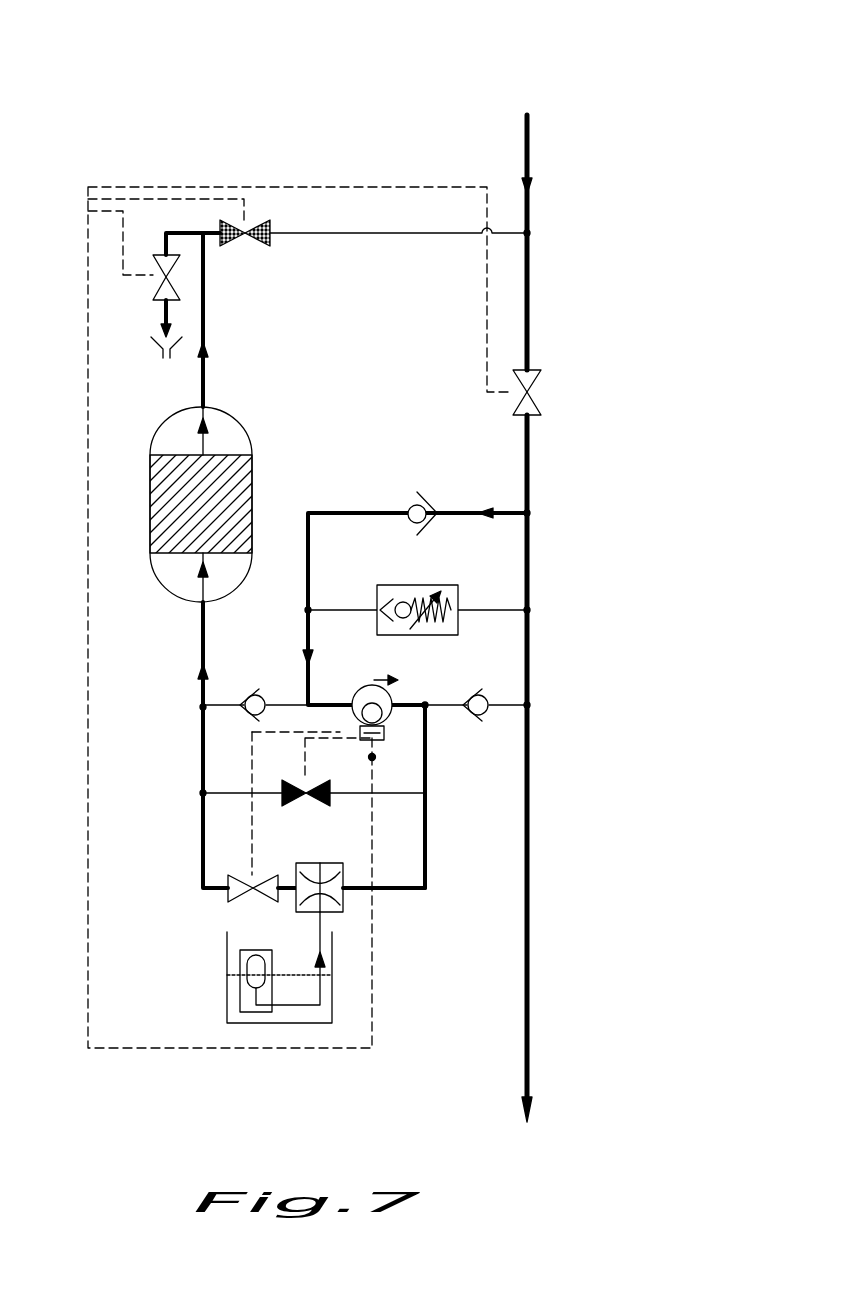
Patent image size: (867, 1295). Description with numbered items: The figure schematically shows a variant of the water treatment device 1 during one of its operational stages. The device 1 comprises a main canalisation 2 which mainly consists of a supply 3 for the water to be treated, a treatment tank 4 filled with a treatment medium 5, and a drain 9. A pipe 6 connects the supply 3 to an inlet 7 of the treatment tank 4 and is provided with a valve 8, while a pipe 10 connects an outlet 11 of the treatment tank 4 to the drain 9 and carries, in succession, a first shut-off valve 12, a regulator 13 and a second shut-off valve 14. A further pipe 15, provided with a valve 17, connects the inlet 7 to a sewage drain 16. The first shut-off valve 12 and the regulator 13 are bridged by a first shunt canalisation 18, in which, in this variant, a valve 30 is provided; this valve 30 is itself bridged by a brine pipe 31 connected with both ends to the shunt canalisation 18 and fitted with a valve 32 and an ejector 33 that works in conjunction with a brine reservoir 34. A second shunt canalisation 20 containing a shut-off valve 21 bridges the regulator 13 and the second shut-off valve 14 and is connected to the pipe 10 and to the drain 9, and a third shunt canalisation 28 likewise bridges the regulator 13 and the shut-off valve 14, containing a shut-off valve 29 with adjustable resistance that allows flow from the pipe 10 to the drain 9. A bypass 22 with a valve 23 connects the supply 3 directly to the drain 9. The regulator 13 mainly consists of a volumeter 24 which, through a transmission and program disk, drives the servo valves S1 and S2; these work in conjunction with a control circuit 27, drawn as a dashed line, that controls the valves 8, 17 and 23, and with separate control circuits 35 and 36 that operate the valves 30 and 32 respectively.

The device 1 is at (279, 96).
The main canalisation 2 is at (170, 706).
The supply 3 is at (527, 143).
The treatment tank 4 is at (252, 430).
The treatment medium 5 is at (255, 472).
The pipe 6 is at (357, 233).
The inlet 7 is at (203, 407).
The valve 8 is at (270, 216).
The drain 9 is at (527, 1010).
The pipe 10 is at (285, 707).
The outlet 11 is at (203, 602).
The first shut-off valve 12 is at (253, 694).
The regulator 13 is at (400, 689).
The second shut-off valve 14 is at (478, 717).
The pipe 15 is at (177, 233).
The sewage drain 16 is at (150, 355).
The valve 17 is at (153, 293).
The shunt canalisation 18 is at (200, 778).
The second shunt canalisation 20 is at (365, 513).
The shut-off valve 21 is at (425, 505).
The bypass 22 is at (530, 305).
The valve 23 is at (537, 362).
The volumeter 24 is at (358, 688).
The control circuit 27 is at (120, 1048).
The third shunt canalisation 28 is at (485, 610).
The shut-off valve with adjustable resistance 29 is at (378, 588).
The valve 30 is at (304, 808).
The brine pipe 31 is at (203, 872).
The valve 32 is at (247, 900).
The ejector 33 is at (345, 863).
The brine reservoir 34 is at (223, 1033).
The control circuit 35 is at (370, 758).
The control circuit 36 is at (252, 835).
The servo valve S1 is at (372, 757).
The servo valve S2 is at (338, 716).